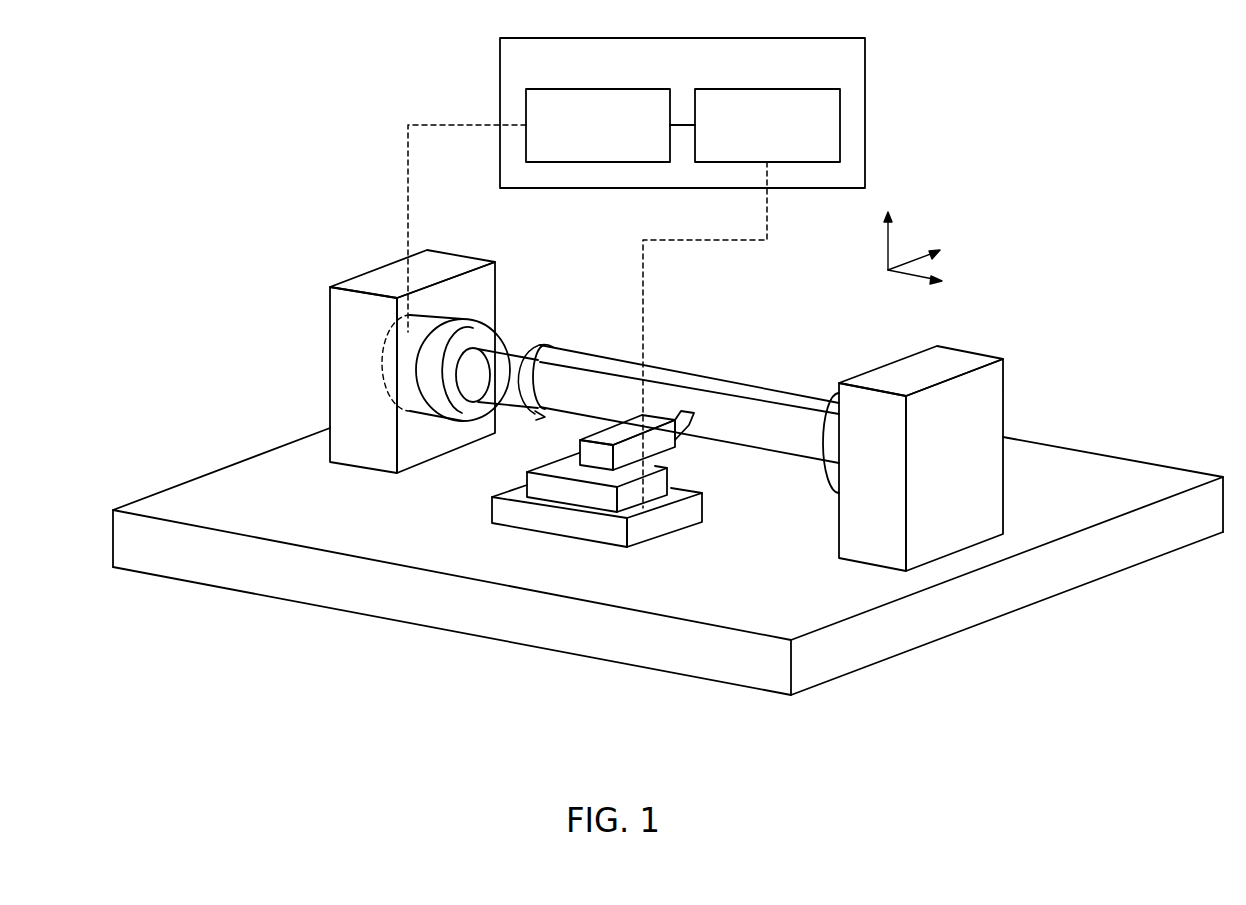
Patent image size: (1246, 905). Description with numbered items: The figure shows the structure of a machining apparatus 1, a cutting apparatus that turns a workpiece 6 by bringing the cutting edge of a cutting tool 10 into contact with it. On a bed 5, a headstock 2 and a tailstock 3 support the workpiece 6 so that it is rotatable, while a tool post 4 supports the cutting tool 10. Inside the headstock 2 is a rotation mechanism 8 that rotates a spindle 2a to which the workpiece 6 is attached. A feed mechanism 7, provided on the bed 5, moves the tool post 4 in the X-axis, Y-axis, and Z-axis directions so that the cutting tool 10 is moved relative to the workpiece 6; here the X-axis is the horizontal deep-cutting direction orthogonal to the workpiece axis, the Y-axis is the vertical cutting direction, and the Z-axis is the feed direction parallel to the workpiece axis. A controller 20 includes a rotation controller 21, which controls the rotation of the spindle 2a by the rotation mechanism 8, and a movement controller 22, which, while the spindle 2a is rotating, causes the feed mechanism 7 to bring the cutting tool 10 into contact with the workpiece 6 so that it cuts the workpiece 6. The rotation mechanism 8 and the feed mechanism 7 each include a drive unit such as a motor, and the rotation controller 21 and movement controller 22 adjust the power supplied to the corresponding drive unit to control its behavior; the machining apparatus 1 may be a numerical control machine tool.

The machining apparatus 1 is at (993, 156).
The headstock 2 is at (340, 313).
The spindle 2a is at (430, 377).
The tailstock 3 is at (995, 382).
The tool post 4 is at (548, 467).
The bed 5 is at (888, 640).
The workpiece 6 is at (760, 413).
The feed mechanism 7 is at (683, 520).
The rotation mechanism 8 is at (388, 348).
The cutting tool 10 is at (660, 445).
The controller 20 is at (637, 254).
The rotation controller 21 is at (633, 89).
The movement controller 22 is at (800, 89).